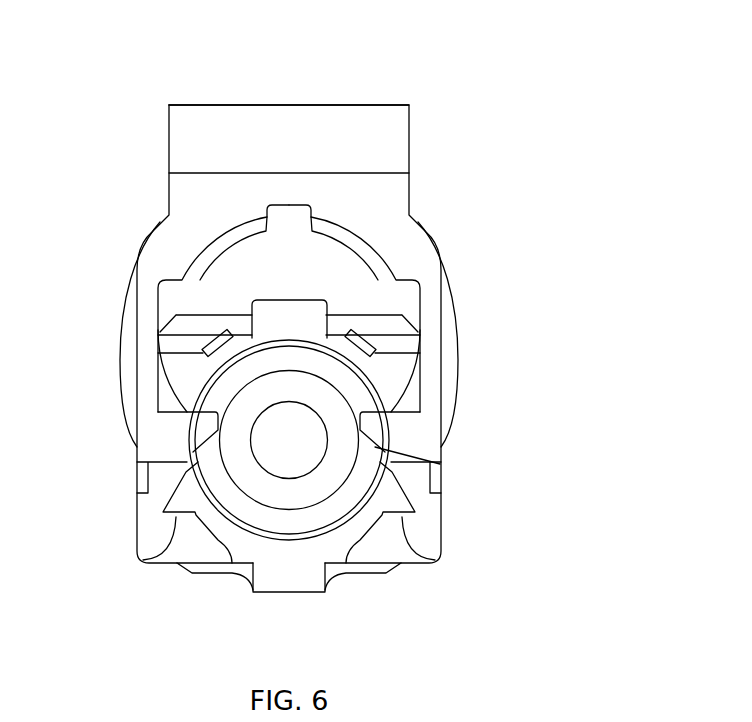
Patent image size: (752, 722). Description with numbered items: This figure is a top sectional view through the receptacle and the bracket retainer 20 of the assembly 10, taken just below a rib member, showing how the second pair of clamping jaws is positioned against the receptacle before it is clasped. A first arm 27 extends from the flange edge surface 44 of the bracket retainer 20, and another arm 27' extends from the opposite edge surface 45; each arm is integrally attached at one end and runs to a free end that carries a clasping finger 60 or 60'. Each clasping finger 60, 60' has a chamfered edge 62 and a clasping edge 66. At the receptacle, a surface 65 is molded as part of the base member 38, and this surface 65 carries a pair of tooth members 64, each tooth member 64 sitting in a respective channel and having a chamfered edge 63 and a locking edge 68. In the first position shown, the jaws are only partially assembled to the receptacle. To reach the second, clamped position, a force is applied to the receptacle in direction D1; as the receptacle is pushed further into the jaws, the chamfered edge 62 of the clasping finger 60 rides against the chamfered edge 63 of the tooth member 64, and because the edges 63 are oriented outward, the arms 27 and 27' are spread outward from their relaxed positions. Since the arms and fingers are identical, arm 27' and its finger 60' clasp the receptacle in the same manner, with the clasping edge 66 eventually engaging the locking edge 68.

The connector assembly 10 is at (190, 605).
The bracket retainer 20 is at (342, 80).
The first arm 27 is at (418, 326).
The arm 27' is at (158, 326).
The base member 38 is at (283, 593).
The edge surface 44 is at (409, 197).
The edge surface 45 is at (169, 190).
The clasping finger 60 is at (376, 405).
The clasping finger 60' is at (131, 432).
The chamfered edge 62 is at (442, 463).
The chamfered edge 63 is at (437, 492).
The tooth member 64 is at (188, 502).
The surface 65 is at (287, 558).
The clasping edge 66 is at (395, 407).
The locking edge 68 is at (428, 556).
The direction D1 is at (289, 226).